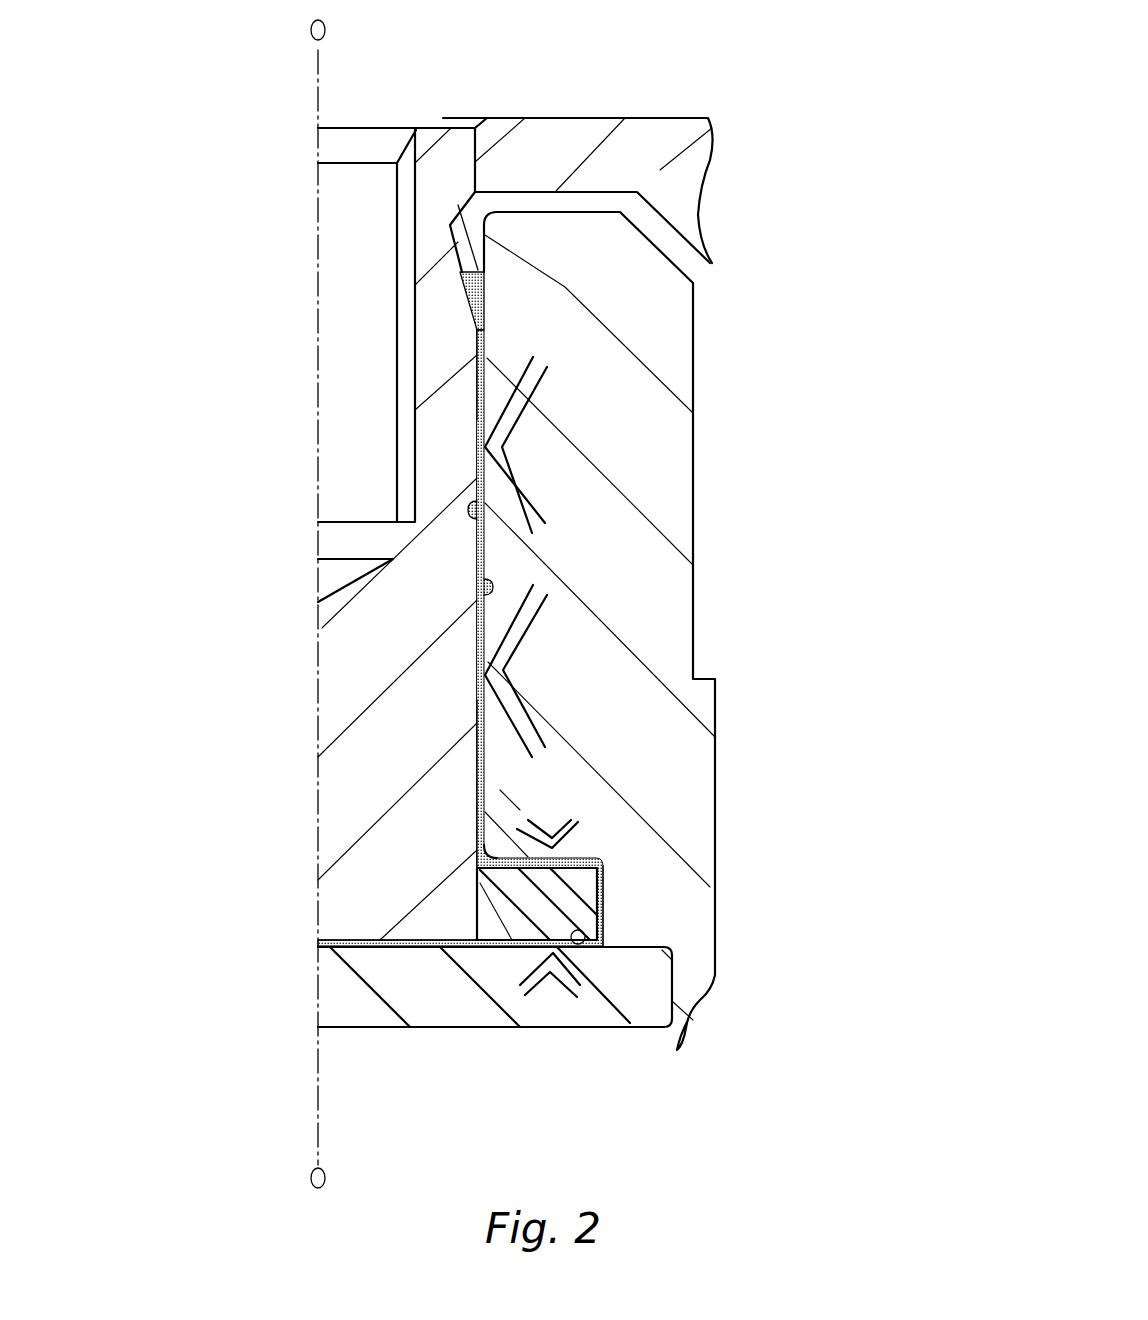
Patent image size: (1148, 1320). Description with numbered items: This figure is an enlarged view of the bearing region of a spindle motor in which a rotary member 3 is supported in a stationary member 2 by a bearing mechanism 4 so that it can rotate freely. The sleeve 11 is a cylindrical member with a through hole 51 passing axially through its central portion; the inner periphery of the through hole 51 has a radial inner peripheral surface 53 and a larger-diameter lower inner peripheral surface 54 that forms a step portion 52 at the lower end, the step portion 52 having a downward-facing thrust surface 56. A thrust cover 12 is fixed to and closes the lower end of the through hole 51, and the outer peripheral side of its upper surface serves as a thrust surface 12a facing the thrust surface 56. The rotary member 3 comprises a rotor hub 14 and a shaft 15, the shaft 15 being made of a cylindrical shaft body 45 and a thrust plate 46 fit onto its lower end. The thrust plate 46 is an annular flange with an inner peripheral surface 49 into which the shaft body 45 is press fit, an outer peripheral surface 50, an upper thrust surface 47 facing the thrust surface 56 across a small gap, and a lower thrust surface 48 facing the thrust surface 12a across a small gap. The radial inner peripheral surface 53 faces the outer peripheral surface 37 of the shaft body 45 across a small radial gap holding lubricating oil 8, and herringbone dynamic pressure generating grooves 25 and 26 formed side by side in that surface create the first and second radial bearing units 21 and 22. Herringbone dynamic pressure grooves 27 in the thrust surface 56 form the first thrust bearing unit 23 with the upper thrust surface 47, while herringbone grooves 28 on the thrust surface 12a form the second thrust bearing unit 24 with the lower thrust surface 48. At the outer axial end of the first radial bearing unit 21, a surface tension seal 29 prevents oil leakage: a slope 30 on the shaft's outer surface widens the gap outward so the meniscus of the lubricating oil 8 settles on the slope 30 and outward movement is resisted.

The stationary member 2 is at (663, 1050).
The rotary member 3 is at (588, 98).
The bearing mechanism 4 is at (543, 718).
The lubricating oil 8 is at (472, 306).
The sleeve 11 is at (647, 477).
The thrust cover 12 is at (485, 1010).
The thrust surface 12a is at (587, 947).
The rotor hub 14 is at (663, 163).
The shaft 15 is at (340, 690).
The first radial bearing unit 21 is at (475, 415).
The second radial bearing unit 22 is at (477, 677).
The first thrust bearing unit 23 is at (583, 845).
The second thrust bearing unit 24 is at (507, 953).
The dynamic pressure generating grooves 25 is at (520, 418).
The dynamic pressure generating grooves 26 is at (515, 637).
The dynamic pressure grooves 27 is at (547, 835).
The dynamic pressure generating grooves 28 is at (568, 993).
The surface tension seal 29 is at (487, 240).
The slope 30 is at (449, 224).
The outer peripheral surface 37 is at (478, 568).
The shaft body 45 is at (355, 732).
The thrust plate 46 is at (513, 902).
The upper thrust surface 47 is at (603, 860).
The lower thrust surface 48 is at (528, 947).
The inner peripheral surface 49 is at (432, 947).
The outer peripheral surface 50 is at (585, 928).
The through hole 51 is at (429, 262).
The step portion 52 is at (552, 967).
The radial inner peripheral surface 53 is at (487, 500).
The lower inner peripheral surface 54 is at (603, 877).
The thrust surface 56 is at (527, 820).